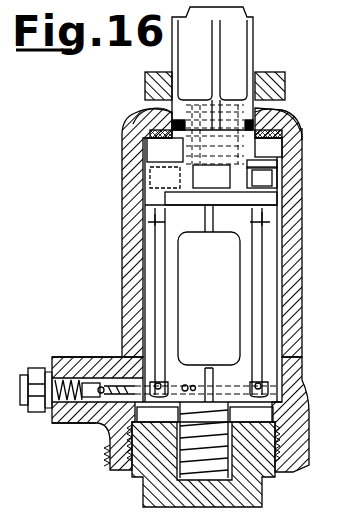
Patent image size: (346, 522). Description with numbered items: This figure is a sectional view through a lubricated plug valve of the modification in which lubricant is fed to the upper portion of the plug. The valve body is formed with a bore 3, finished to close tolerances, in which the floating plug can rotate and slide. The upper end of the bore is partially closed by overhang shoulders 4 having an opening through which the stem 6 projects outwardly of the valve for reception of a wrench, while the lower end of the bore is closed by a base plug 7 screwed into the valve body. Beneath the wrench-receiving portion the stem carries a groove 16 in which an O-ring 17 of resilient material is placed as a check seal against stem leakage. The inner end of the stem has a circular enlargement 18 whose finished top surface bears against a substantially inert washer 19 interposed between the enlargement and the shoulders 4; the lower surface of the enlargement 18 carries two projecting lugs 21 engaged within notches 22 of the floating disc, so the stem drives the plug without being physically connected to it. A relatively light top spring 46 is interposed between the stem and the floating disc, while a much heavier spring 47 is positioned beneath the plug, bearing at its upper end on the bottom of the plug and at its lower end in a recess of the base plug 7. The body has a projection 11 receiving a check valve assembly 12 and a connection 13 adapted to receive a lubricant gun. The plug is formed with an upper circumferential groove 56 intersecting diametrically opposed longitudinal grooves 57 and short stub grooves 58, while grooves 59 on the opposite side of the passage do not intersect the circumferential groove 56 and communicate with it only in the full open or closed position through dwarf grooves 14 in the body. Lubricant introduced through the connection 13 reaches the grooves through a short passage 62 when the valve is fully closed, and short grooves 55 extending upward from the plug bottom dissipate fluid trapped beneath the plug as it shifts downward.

The bore 3 is at (304, 152).
The overhang shoulders 4 is at (140, 119).
The stem 6 is at (256, 48).
The base plug 7 is at (263, 497).
The projection 11 is at (81, 359).
The check valve assembly 12 is at (90, 408).
The connection 13 is at (36, 368).
The dwarf grooves 14 is at (166, 224).
The groove 16 is at (158, 113).
The O-ring 17 is at (270, 107).
The circular enlargement 18 is at (157, 152).
The washer 19 is at (303, 133).
The projecting lugs 21 is at (213, 176).
The notches 22 is at (263, 161).
The top spring 46 is at (234, 156).
The heavy spring 47 is at (180, 415).
The short grooves 55 is at (212, 378).
The upper circumferential groove 56 is at (230, 213).
The longitudinal grooves 57 is at (166, 293).
The stub grooves 58 is at (252, 203).
The grooves 59 is at (252, 303).
The short passage 62 is at (187, 386).